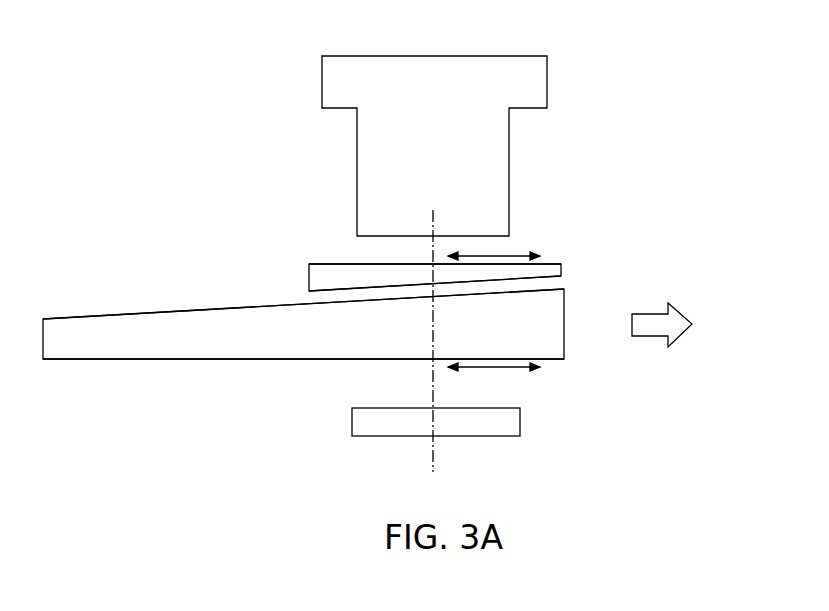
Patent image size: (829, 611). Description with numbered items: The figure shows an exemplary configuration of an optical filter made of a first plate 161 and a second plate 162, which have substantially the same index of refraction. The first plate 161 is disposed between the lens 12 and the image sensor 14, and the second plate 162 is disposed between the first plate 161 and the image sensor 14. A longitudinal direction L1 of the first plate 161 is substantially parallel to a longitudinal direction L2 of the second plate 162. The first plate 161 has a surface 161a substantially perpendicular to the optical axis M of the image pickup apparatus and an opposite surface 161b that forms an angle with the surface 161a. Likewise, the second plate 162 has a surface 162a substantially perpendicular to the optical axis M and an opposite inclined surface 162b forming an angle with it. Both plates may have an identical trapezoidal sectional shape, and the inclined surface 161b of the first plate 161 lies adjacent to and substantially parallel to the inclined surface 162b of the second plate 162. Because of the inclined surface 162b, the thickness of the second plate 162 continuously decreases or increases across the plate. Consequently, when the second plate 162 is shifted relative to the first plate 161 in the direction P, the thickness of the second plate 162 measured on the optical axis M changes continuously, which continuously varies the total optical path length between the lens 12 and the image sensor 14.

The lens 12 is at (443, 171).
The image sensor 14 is at (462, 431).
The first plate 161 is at (408, 285).
The second plate 162 is at (408, 333).
The surface of the first plate 161a is at (338, 263).
The inclined surface of the first plate 161b is at (540, 279).
The surface of the second plate 162a is at (308, 360).
The inclined surface of the second plate 162b is at (268, 307).
The longitudinal direction of the first plate L1 is at (494, 248).
The longitudinal direction of the second plate L2 is at (494, 375).
The optical axis M is at (432, 458).
The direction P is at (655, 337).